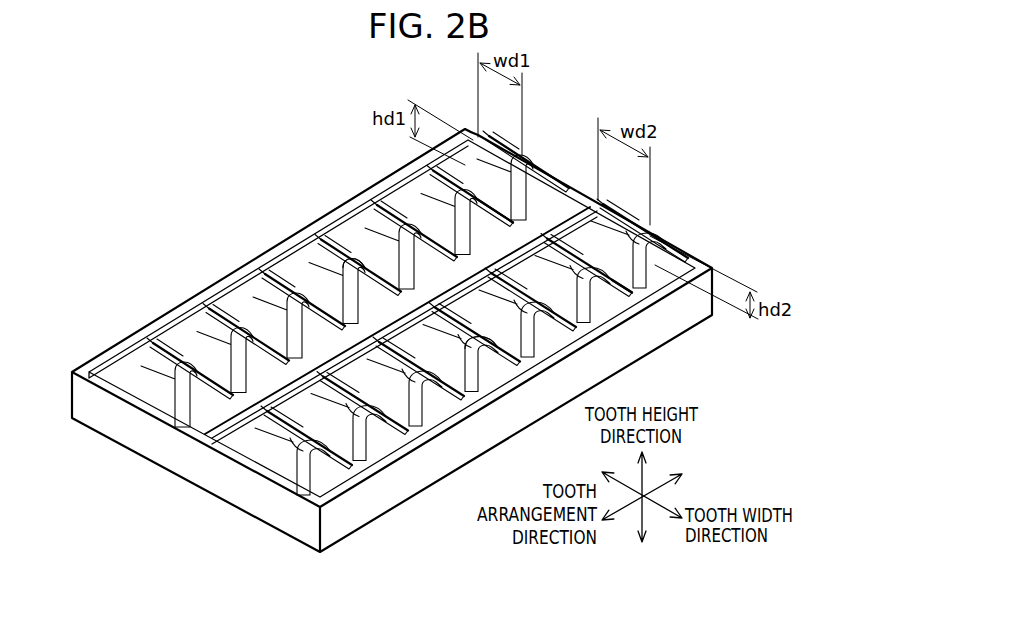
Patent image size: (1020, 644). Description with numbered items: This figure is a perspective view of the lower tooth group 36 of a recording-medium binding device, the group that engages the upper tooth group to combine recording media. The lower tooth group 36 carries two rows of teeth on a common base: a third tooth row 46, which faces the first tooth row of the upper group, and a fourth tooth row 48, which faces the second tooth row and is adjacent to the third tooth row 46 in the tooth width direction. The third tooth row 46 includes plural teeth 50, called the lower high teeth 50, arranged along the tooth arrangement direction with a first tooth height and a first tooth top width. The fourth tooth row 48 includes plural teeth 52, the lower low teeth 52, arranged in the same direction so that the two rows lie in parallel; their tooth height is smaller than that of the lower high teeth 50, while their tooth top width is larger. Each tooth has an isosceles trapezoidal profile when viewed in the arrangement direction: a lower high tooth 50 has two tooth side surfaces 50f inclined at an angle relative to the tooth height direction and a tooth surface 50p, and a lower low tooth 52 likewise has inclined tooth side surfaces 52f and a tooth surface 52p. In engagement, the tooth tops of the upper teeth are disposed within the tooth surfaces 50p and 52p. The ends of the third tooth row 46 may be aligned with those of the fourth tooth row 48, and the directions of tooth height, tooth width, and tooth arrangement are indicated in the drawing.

The lower tooth group 36 is at (204, 153).
The third tooth row 46 is at (358, 242).
The fourth tooth row 48 is at (518, 350).
The lower high tooth 50 is at (265, 274).
The tooth surface of lower high tooth 50p is at (368, 247).
The tooth side surface of lower high tooth 50f is at (482, 224).
The lower low tooth 52 is at (458, 400).
The tooth surface of lower low tooth 52p is at (500, 368).
The tooth side surface of lower low tooth 52f is at (607, 295).